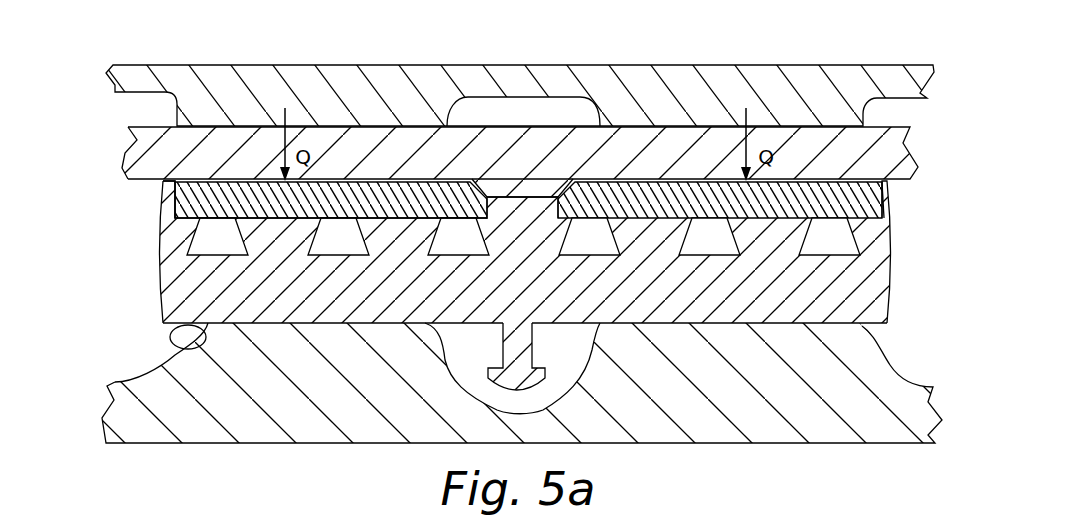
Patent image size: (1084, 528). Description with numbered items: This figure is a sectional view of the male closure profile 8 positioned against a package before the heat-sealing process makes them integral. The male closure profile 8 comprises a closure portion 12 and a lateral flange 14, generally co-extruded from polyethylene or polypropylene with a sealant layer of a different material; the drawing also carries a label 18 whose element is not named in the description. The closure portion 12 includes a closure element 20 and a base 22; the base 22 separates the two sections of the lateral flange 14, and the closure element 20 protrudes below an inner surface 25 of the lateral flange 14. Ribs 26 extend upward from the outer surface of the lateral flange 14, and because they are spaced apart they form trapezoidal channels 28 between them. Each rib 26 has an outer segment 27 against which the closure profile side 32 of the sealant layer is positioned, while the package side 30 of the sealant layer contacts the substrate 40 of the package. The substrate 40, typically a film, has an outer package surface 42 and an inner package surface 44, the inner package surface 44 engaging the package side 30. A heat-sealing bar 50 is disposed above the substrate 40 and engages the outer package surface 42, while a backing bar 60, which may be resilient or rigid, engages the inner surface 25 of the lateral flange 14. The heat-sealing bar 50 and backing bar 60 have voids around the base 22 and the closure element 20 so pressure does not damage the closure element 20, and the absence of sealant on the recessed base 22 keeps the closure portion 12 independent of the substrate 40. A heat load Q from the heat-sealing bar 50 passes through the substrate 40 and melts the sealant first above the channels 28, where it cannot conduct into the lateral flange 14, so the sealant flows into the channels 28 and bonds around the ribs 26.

The male closure profile 8 is at (138, 307).
The closure portion 12 is at (566, 348).
The lateral flange 14 is at (140, 284).
The sealing layer 18 is at (140, 204).
The closure element 20 is at (546, 378).
The base 22 is at (537, 190).
The inner surface 25 is at (170, 340).
The ribs 26 is at (393, 235).
The outer segment 27 is at (830, 223).
The channels 28 is at (712, 240).
The package side 30 is at (165, 216).
The closure profile side 32 is at (878, 203).
The substrate 40 is at (116, 161).
The outer package surface 42 is at (507, 118).
The inner package surface 44 is at (128, 140).
The heat-sealing bar 50 is at (110, 82).
The backing bar 60 is at (112, 372).